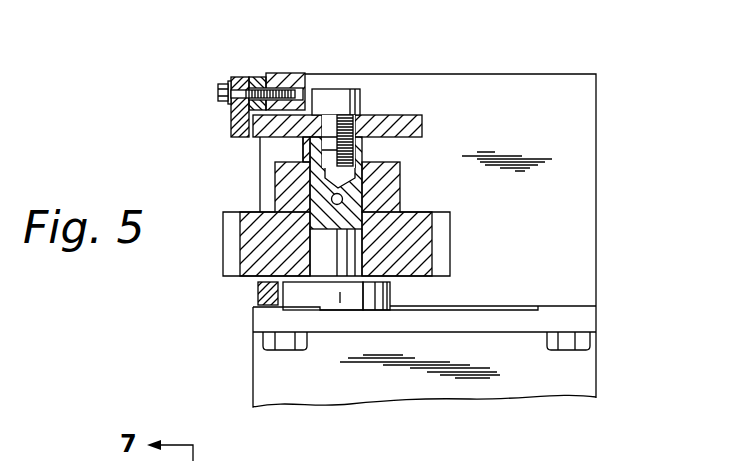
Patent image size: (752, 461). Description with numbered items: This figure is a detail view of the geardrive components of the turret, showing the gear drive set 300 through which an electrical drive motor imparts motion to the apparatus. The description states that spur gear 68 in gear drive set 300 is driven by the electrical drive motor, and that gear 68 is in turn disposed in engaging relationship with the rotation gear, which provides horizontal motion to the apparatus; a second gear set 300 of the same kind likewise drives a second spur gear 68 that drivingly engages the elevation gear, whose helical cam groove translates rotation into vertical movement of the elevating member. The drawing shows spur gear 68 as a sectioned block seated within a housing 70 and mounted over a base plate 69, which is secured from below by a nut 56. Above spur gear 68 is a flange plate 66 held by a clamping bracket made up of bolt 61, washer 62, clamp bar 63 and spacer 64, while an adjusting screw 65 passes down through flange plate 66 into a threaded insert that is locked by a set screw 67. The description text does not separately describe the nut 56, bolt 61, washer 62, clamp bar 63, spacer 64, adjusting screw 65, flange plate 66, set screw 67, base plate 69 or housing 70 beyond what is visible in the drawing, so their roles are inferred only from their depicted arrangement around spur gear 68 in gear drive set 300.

The nut 56 is at (572, 343).
The bolt 61 is at (216, 92).
The washer 62 is at (233, 77).
The clamp bar 63 is at (243, 76).
The spacer 64 is at (256, 77).
The adjusting screw 65 is at (343, 98).
The flange plate 66 is at (407, 113).
The set screw 67 is at (331, 198).
The spur gear 68 is at (421, 210).
The base plate 69 is at (507, 385).
The housing 70 is at (596, 136).
The gear drive set 300 is at (607, 240).